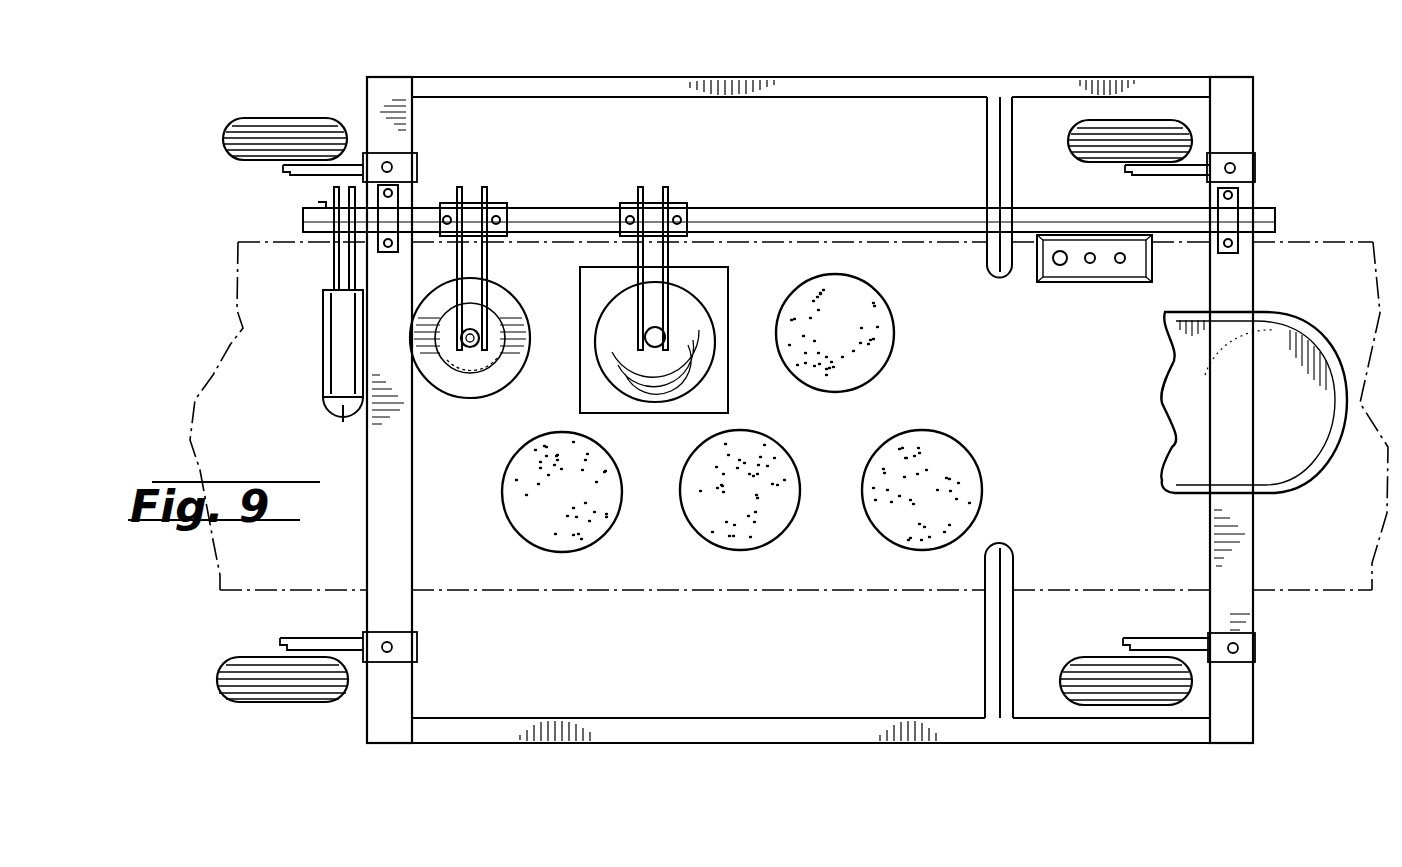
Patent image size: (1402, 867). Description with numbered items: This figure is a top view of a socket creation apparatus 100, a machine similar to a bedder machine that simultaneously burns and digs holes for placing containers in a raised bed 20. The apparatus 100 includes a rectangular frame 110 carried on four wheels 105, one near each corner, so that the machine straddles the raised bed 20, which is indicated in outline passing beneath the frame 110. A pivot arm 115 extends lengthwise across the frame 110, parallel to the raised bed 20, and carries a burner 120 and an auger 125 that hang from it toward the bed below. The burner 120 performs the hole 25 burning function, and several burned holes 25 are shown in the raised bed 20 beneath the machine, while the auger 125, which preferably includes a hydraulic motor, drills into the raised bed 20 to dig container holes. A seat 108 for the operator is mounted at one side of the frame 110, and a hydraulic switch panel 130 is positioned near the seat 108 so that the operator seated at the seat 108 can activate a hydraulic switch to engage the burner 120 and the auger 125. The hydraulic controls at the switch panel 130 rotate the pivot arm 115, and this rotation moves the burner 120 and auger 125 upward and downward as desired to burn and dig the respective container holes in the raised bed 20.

The socket creation apparatus 100 is at (343, 732).
The wheels 105 is at (272, 128).
The seat 108 is at (1290, 457).
The frame 110 is at (860, 82).
The pivot arm 115 is at (855, 209).
The burner 120 is at (492, 389).
The auger 125 is at (703, 324).
The hydraulic switch panel 130 is at (1090, 283).
The raised bed 20 is at (733, 590).
The hole 25 is at (852, 345).